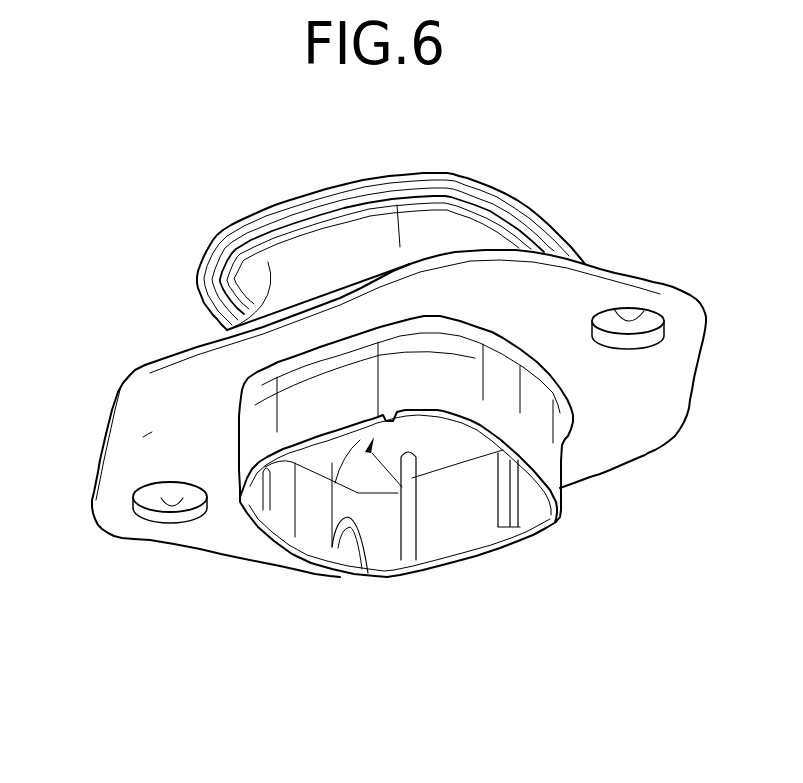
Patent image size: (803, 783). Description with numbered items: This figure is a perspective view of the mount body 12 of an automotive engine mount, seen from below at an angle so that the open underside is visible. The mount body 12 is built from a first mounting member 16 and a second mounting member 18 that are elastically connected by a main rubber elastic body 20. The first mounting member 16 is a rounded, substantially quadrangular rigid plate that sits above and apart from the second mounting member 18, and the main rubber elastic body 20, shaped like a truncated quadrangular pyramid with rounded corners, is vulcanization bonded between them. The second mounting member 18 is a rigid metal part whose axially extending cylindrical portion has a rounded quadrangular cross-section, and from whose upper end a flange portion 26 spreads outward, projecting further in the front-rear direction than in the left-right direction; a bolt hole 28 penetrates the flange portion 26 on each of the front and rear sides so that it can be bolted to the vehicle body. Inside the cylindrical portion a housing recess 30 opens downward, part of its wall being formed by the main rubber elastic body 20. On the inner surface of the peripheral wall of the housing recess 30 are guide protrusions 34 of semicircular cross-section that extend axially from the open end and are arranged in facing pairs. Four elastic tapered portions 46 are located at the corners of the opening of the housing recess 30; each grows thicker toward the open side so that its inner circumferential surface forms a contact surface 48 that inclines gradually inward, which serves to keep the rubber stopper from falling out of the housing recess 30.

The mount body 12 is at (619, 199).
The first mounting member 16 is at (278, 209).
The second mounting member 18 is at (134, 361).
The main rubber elastic body 20 is at (362, 262).
The flange portion 26 is at (143, 437).
The bolt hole 28 is at (644, 311).
The housing recess 30 is at (333, 460).
The guide protrusion 34 is at (388, 420).
The elastic tapered portion 46 is at (263, 487).
The contact surface 48 is at (351, 545).